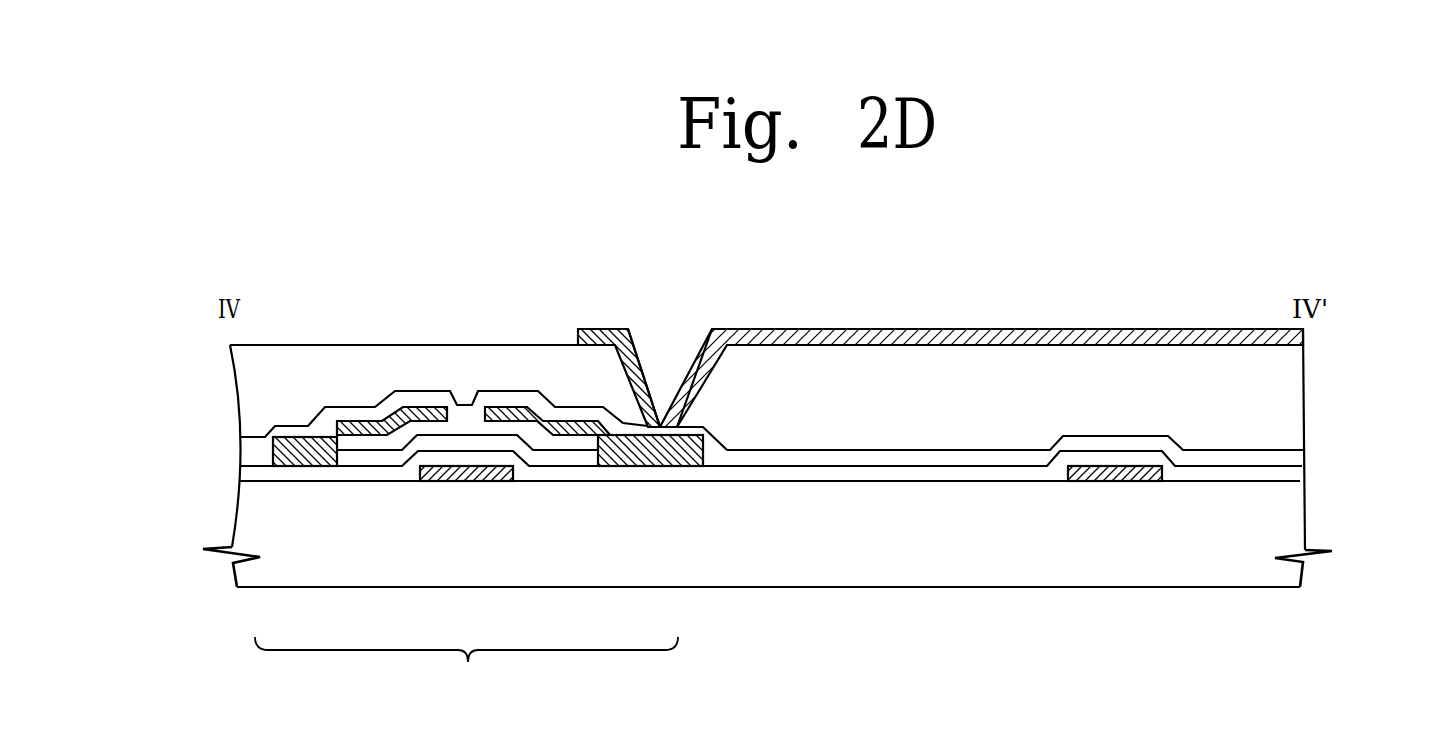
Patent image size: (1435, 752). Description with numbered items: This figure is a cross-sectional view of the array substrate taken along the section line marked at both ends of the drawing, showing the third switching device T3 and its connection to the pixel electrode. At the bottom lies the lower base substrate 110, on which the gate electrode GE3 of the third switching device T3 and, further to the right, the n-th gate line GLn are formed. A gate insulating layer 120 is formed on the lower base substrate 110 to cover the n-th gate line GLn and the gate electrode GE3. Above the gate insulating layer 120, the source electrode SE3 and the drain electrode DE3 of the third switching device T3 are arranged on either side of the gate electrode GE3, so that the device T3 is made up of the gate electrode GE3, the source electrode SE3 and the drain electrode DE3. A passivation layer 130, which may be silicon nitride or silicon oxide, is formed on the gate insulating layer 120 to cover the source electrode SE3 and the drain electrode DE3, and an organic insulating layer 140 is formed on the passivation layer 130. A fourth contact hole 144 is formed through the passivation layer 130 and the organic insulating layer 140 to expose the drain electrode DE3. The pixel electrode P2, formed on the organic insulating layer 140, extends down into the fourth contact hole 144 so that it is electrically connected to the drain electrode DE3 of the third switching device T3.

The lower base substrate 110 is at (1293, 518).
The gate insulating layer 120 is at (240, 474).
The passivation layer 130 is at (241, 456).
The organic insulating layer 140 is at (238, 392).
The fourth contact hole 144 is at (668, 340).
The gate electrode GE3 is at (462, 483).
The source electrode SE3 is at (280, 468).
The drain electrode DE3 is at (640, 468).
The n-th gate line GLn is at (1113, 483).
The pixel electrode P2 is at (988, 329).
The third switching device T3 is at (466, 669).